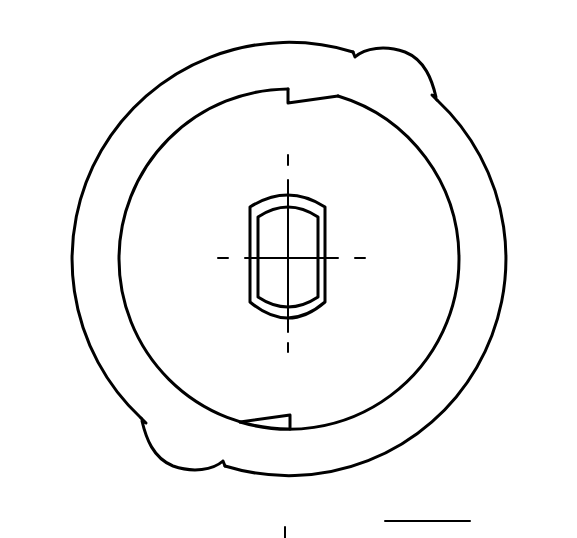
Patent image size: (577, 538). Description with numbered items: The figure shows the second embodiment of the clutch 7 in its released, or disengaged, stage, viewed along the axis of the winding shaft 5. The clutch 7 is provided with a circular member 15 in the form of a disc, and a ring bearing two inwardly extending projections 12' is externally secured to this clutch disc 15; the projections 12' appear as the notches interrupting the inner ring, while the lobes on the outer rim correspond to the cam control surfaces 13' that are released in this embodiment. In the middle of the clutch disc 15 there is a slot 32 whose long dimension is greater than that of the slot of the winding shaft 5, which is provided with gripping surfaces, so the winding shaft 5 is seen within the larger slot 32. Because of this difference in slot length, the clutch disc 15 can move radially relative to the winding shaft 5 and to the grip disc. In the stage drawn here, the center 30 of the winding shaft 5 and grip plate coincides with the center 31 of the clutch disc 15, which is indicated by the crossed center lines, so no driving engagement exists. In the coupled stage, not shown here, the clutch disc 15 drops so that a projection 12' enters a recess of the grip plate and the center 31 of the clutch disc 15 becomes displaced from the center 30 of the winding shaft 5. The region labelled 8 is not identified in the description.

The clutch 7 is at (105, 99).
The circular member 15 is at (477, 143).
The cam control surface 13' is at (318, 259).
The inner disc 8 is at (433, 247).
The inwardly extending projection 12' is at (318, 221).
The center of winding shaft 30 is at (192, 253).
The center of clutch disc 31 is at (283, 257).
The slot 32 is at (325, 307).
The winding shaft 5 is at (305, 287).